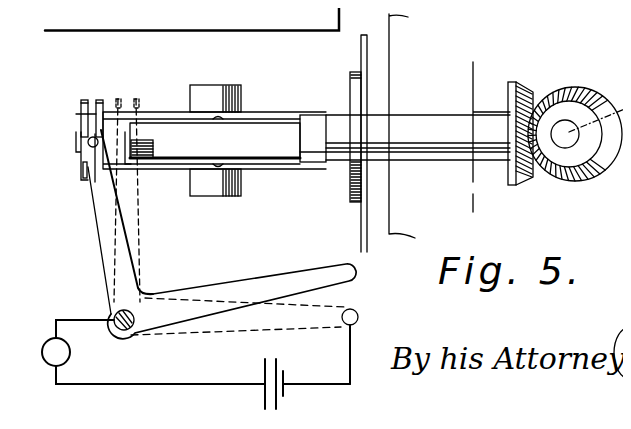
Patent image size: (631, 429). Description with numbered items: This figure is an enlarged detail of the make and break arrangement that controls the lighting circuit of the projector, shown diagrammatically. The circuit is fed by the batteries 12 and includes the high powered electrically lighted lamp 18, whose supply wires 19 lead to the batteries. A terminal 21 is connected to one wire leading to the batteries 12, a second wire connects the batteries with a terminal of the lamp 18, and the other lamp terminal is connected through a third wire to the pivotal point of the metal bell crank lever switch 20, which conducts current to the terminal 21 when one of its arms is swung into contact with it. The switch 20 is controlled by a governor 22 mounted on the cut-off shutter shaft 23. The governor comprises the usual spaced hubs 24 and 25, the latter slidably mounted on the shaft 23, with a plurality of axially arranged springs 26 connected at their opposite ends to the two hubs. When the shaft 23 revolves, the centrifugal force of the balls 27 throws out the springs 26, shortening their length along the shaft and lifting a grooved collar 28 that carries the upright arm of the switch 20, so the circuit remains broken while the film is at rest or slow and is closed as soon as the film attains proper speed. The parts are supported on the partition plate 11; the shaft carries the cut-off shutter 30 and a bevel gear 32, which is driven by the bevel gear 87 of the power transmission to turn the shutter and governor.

The partition plate 11 is at (212, 21).
The batteries 12 is at (282, 391).
The lamp 18 is at (62, 350).
The supply wires 19 is at (63, 318).
The bell crank lever switch 20 is at (270, 278).
The terminal 21 is at (356, 314).
The governor 22 is at (215, 120).
The cut-off shutter shaft 23 is at (142, 160).
The hub 24 is at (311, 113).
The hub 25 is at (117, 100).
The springs 26 is at (166, 111).
The balls 27 is at (207, 84).
The grooved collar 28 is at (78, 110).
The cut-off shutter 30 is at (357, 45).
The bevel gear 32 is at (508, 84).
The bevel gear 87 is at (549, 83).